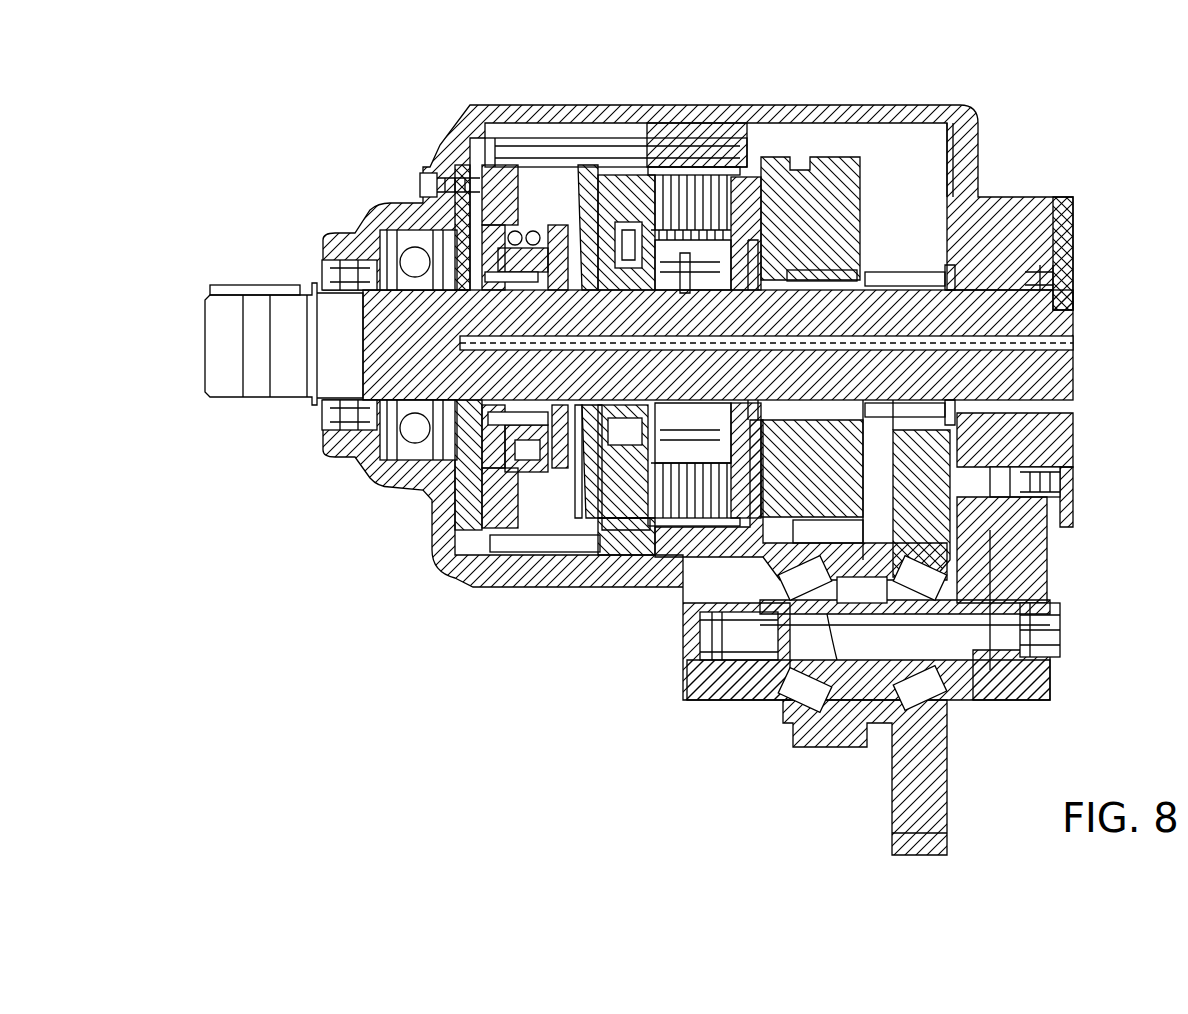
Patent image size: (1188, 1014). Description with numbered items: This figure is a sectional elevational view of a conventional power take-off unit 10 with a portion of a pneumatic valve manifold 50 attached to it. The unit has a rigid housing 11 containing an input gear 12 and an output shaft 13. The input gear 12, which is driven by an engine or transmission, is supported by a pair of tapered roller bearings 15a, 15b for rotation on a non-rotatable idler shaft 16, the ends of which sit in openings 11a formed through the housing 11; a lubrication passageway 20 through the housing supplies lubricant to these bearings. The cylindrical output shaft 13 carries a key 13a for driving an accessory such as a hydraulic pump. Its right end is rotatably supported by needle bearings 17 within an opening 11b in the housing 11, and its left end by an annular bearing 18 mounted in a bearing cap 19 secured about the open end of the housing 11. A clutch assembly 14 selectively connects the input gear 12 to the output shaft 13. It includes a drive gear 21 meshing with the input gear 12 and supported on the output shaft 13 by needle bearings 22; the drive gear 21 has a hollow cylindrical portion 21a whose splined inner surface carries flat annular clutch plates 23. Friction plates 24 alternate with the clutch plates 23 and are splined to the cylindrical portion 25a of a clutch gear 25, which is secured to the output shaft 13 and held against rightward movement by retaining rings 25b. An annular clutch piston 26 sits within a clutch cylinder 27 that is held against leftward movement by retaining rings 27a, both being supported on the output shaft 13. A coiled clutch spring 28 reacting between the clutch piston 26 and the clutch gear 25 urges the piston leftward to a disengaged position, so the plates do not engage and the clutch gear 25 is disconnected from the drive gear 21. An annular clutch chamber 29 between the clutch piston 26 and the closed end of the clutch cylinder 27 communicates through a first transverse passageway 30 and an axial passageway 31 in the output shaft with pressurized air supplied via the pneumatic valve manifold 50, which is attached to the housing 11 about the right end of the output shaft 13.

The power take-off unit 10 is at (176, 76).
The housing 11 is at (838, 107).
The openings 11a is at (1050, 610).
The opening 11b is at (1073, 325).
The input gear 12 is at (898, 790).
The output shaft 13 is at (215, 397).
The key 13a is at (252, 285).
The clutch assembly 14 is at (688, 150).
The tapered roller bearing 15a is at (770, 702).
The tapered roller bearing 15b is at (950, 702).
The idler shaft 16 is at (690, 668).
The needle bearings 17 is at (1060, 435).
The annular bearing 18 is at (403, 250).
The bearing cap 19 is at (360, 478).
The lubrication passageway 20 is at (1063, 485).
The drive gear 21 is at (845, 190).
The hollow cylindrical portion 21a is at (725, 140).
The needle bearings 22 is at (840, 272).
The clutch plates 23 is at (684, 168).
The friction plates 24 is at (656, 168).
The clutch gear 25 is at (770, 160).
The cylindrical portion 25a is at (686, 290).
The retaining rings 25b is at (753, 245).
The clutch piston 26 is at (622, 522).
The clutch cylinder 27 is at (580, 550).
The retaining rings 27a is at (575, 286).
The clutch spring 28 is at (650, 402).
The clutch chamber 29 is at (622, 290).
The first transverse passageway 30 is at (600, 352).
The axial passageway 31 is at (1073, 350).
The pneumatic valve manifold 50 is at (1075, 216).